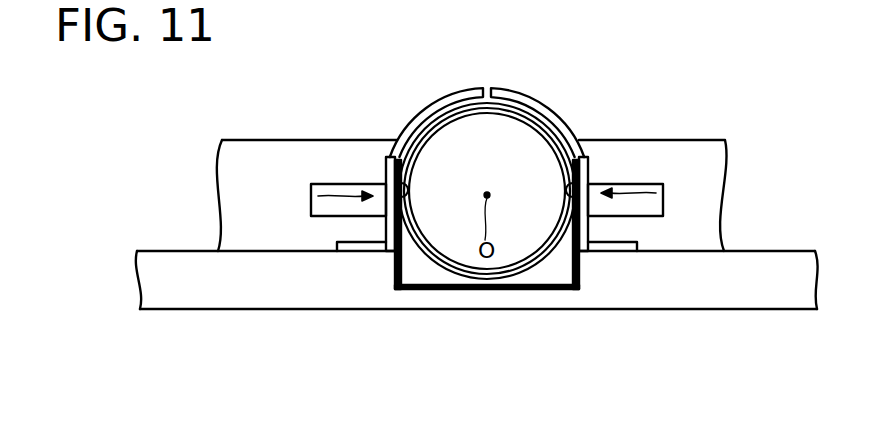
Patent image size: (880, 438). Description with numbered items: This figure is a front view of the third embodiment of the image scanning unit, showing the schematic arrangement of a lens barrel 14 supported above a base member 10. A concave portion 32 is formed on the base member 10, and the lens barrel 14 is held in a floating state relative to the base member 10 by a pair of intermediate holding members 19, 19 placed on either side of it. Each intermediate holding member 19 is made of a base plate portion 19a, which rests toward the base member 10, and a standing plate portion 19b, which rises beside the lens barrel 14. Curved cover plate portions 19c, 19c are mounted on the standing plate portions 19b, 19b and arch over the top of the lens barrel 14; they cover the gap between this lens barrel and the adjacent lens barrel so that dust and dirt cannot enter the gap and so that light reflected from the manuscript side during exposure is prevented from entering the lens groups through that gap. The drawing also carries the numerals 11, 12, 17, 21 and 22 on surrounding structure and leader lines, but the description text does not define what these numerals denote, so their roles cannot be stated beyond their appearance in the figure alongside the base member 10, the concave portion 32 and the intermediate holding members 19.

The base member 10 is at (766, 298).
The housing plate 11 is at (272, 150).
The frame member 12 is at (310, 210).
The lens barrel 14 is at (533, 100).
The rotary shaft 17 is at (443, 143).
The intermediate holding member 19 is at (663, 197).
The base plate portion 19a is at (617, 241).
The standing plate portion 19b is at (588, 173).
The curved cover plate portion 19c is at (517, 88).
The engaging portion 21 is at (587, 157).
The bracket side wall 22 is at (607, 252).
The concave portion 32 is at (540, 289).